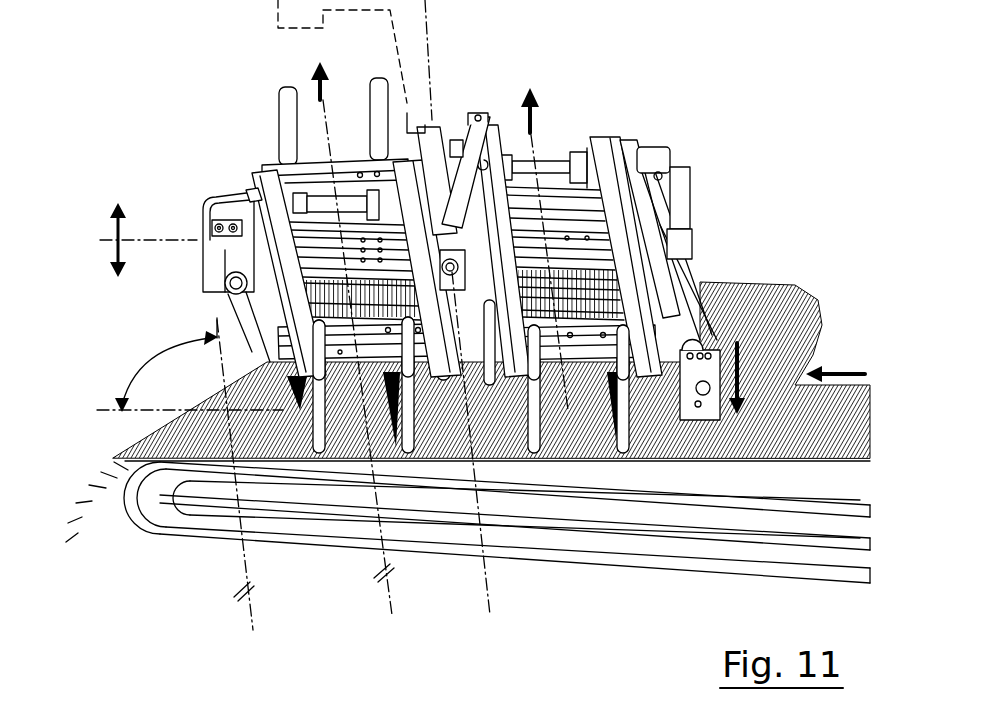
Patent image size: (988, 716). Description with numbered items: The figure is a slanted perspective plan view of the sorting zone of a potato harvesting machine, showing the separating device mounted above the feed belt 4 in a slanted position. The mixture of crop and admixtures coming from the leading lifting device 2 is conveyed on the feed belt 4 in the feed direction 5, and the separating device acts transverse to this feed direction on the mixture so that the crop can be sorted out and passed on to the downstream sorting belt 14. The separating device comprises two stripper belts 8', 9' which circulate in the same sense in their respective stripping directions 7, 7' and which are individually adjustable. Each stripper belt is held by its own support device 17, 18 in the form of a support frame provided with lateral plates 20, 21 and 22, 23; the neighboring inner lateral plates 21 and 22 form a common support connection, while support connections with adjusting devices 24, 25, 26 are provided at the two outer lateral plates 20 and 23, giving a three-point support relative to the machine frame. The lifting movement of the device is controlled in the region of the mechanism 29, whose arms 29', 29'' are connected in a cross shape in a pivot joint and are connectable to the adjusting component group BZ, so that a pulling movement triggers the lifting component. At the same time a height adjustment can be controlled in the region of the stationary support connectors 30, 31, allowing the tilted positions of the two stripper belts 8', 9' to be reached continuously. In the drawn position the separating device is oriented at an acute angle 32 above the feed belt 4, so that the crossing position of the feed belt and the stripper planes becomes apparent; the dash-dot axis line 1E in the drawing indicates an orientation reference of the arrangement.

The lifting device 2 is at (285, 627).
The feed belt 4 is at (787, 490).
The feed direction 5 is at (836, 370).
The stripping direction 7 is at (549, 249).
The stripping direction 7' is at (352, 338).
The stripper belt 8' is at (627, 226).
The stripper belt 9' is at (313, 217).
The sorting belt 14 is at (753, 265).
The support device 17 is at (702, 188).
The support device 18 is at (184, 216).
The lateral plate 20 is at (640, 137).
The lateral plate 21 is at (466, 116).
The lateral plate 22 is at (440, 133).
The lateral plate 23 is at (249, 186).
The adjusting device 24 is at (672, 170).
The adjusting device 25 is at (712, 350).
The adjusting device 26 is at (206, 268).
The mechanism 29 is at (503, 158).
The arm 29' is at (562, 128).
The arm 29'' is at (471, 99).
The stationary support connector 30 is at (708, 415).
The stationary support connector 31 is at (216, 293).
The angle 32 is at (150, 370).
The axis 1E is at (422, 52).
The adjusting component group BZ is at (330, 44).